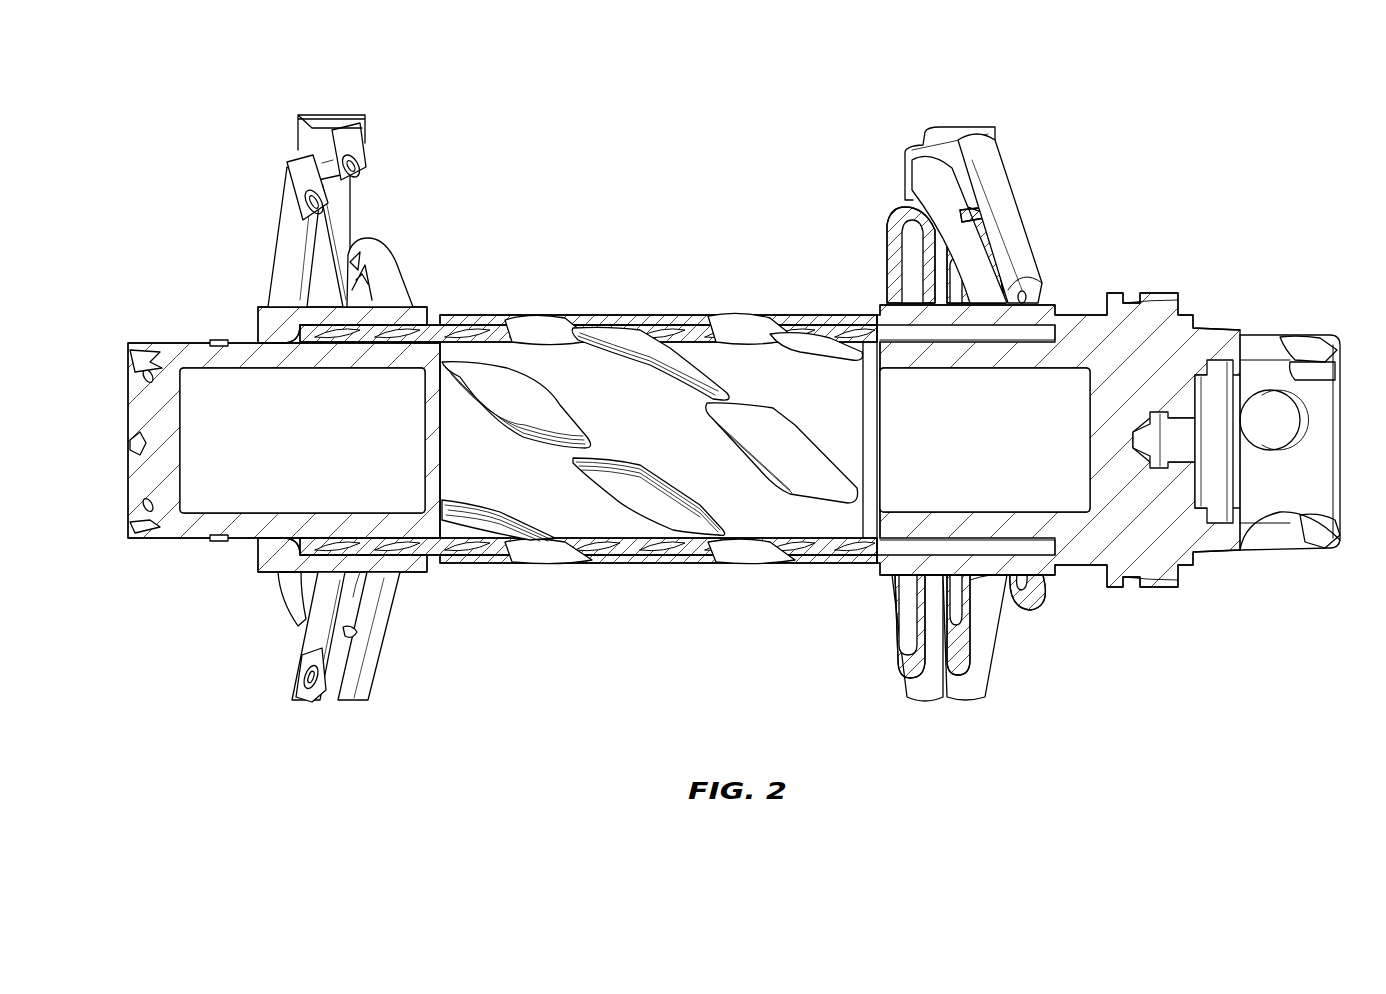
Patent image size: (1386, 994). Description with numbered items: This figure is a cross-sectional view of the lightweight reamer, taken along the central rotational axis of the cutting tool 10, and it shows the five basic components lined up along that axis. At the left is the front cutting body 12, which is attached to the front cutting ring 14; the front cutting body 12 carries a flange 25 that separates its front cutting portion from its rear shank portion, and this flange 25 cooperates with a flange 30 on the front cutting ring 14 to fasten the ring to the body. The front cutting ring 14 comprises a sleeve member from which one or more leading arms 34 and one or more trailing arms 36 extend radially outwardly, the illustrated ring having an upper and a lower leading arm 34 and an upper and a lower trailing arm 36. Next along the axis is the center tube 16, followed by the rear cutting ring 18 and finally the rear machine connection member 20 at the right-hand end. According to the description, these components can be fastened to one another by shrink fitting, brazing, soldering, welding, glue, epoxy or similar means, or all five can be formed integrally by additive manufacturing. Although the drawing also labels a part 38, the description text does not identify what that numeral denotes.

The cutting tool 10 is at (1262, 97).
The front cutting body 12 is at (150, 296).
The front cutting ring 14 is at (248, 192).
The center tube 16 is at (622, 314).
The rear cutting ring 18 is at (1046, 196).
The rear machine connection member 20 is at (1218, 278).
The flange 25 is at (292, 330).
The flange 30 is at (272, 328).
The leading arm 34 is at (262, 246).
The trailing arm 36 is at (412, 268).
The bracket 38 is at (360, 102).